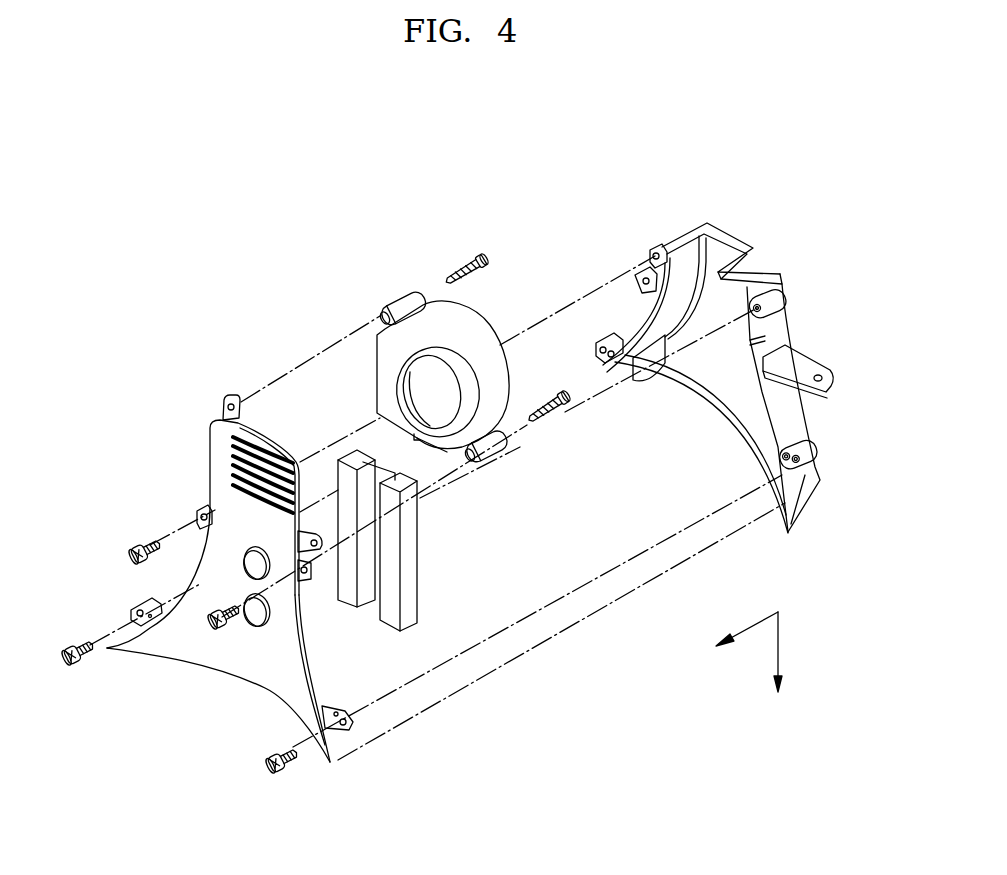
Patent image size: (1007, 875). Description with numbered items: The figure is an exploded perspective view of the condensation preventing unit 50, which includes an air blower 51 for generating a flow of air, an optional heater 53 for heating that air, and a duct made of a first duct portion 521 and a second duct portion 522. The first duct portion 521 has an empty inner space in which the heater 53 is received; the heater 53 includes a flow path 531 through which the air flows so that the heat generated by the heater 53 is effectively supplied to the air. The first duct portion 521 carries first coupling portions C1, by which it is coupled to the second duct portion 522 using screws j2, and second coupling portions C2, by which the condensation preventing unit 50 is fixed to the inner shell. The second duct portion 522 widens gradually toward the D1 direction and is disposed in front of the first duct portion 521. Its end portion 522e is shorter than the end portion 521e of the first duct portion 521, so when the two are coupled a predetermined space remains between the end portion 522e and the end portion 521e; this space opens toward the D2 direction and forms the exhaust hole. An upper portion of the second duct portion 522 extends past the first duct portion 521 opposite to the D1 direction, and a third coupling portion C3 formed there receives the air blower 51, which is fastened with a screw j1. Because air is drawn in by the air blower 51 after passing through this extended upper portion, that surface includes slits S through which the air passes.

The condensation preventing unit 50 is at (628, 190).
The air blower 51 is at (432, 323).
The screw j1 is at (469, 259).
The first duct portion 521 is at (775, 323).
The end portion of the first duct portion 521e is at (680, 420).
The first coupling portions C1 is at (772, 300).
The second coupling portions C2 is at (830, 362).
The third coupling portion C3 is at (231, 394).
The second duct portion 522 is at (250, 667).
The end portion of the second duct portion 522e is at (150, 654).
The slits S is at (237, 457).
The screws j2 is at (137, 541).
The heater 53 is at (410, 606).
The flow path 531 is at (360, 587).
The D1 direction D1 is at (784, 667).
The D2 direction D2 is at (729, 641).